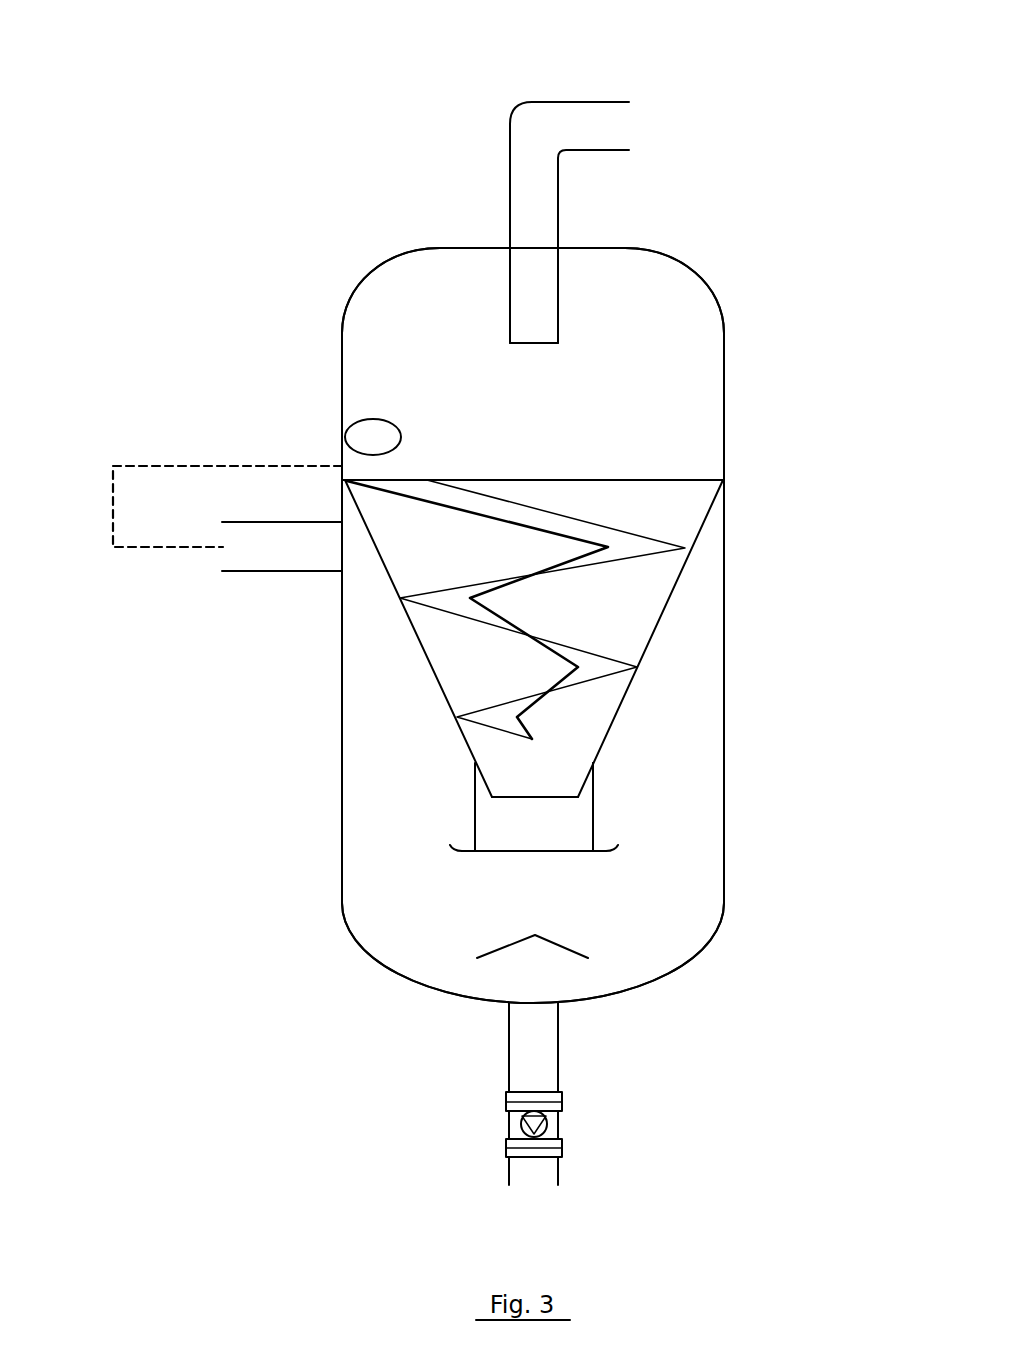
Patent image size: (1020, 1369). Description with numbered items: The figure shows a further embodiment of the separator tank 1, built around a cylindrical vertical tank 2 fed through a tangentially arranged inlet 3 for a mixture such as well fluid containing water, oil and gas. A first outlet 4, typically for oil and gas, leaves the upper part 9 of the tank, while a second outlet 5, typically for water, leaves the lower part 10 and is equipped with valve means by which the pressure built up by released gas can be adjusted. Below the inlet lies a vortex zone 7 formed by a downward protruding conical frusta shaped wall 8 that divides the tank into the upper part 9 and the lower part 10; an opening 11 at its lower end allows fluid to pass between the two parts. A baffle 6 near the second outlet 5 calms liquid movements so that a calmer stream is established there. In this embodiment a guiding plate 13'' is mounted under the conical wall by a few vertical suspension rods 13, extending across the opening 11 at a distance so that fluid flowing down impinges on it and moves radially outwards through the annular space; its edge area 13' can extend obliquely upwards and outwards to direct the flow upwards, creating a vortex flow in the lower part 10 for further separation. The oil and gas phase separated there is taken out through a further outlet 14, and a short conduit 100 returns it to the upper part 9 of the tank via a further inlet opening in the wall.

The separator tank 1 is at (362, 232).
The cylindrical vertical tank 2 is at (724, 402).
The tangentially arranged inlet 3 is at (347, 422).
The first outlet 4 is at (580, 120).
The second outlet 5 is at (547, 1047).
The baffle 6 is at (557, 942).
The vortex zone 7 is at (607, 614).
The conical frusta shaped wall 8 is at (618, 709).
The upper part of the tank 9 is at (602, 367).
The lower part of the tank 10 is at (433, 903).
The opening 11 is at (502, 797).
The vertical suspension rods 13 is at (420, 815).
The edge area of guiding plate 13' is at (646, 803).
The guiding plate 13'' is at (534, 881).
The further outlet 14 is at (252, 558).
The conduit 100 is at (148, 463).